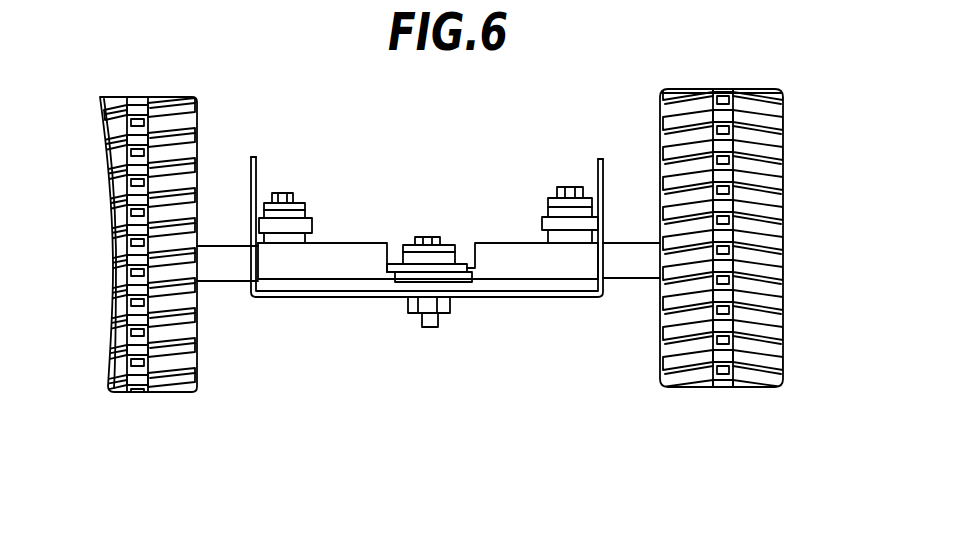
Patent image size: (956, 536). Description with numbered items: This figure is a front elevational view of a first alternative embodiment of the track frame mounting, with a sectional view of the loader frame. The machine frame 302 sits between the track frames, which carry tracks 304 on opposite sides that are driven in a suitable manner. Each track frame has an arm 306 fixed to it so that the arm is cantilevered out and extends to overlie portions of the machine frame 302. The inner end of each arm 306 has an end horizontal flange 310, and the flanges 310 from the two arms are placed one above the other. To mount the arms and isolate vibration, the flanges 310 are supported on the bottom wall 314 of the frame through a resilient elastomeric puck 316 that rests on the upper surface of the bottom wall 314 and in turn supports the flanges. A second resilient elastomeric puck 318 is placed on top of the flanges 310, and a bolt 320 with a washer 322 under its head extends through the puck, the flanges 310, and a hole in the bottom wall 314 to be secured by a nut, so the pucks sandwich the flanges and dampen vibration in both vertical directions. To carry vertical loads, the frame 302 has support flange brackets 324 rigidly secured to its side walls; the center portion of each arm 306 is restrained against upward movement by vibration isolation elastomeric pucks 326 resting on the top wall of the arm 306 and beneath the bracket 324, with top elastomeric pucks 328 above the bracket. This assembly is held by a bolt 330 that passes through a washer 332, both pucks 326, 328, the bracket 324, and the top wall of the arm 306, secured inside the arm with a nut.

The machine frame 302 is at (585, 298).
The tracks 304 is at (118, 335).
The arm 306 is at (235, 270).
The end horizontal flange 310 is at (447, 278).
The bottom wall 314 is at (287, 303).
The resilient elastomeric puck 316 is at (403, 285).
The second resilient elastomeric puck 318 is at (398, 280).
The bolt 320 is at (433, 237).
The washer 322 is at (417, 237).
The support flange bracket 324 is at (313, 227).
The vibration isolation elastomeric puck 326 is at (312, 240).
The top elastomeric puck 328 is at (312, 217).
The bolt 330 is at (282, 192).
The washer 332 is at (302, 203).